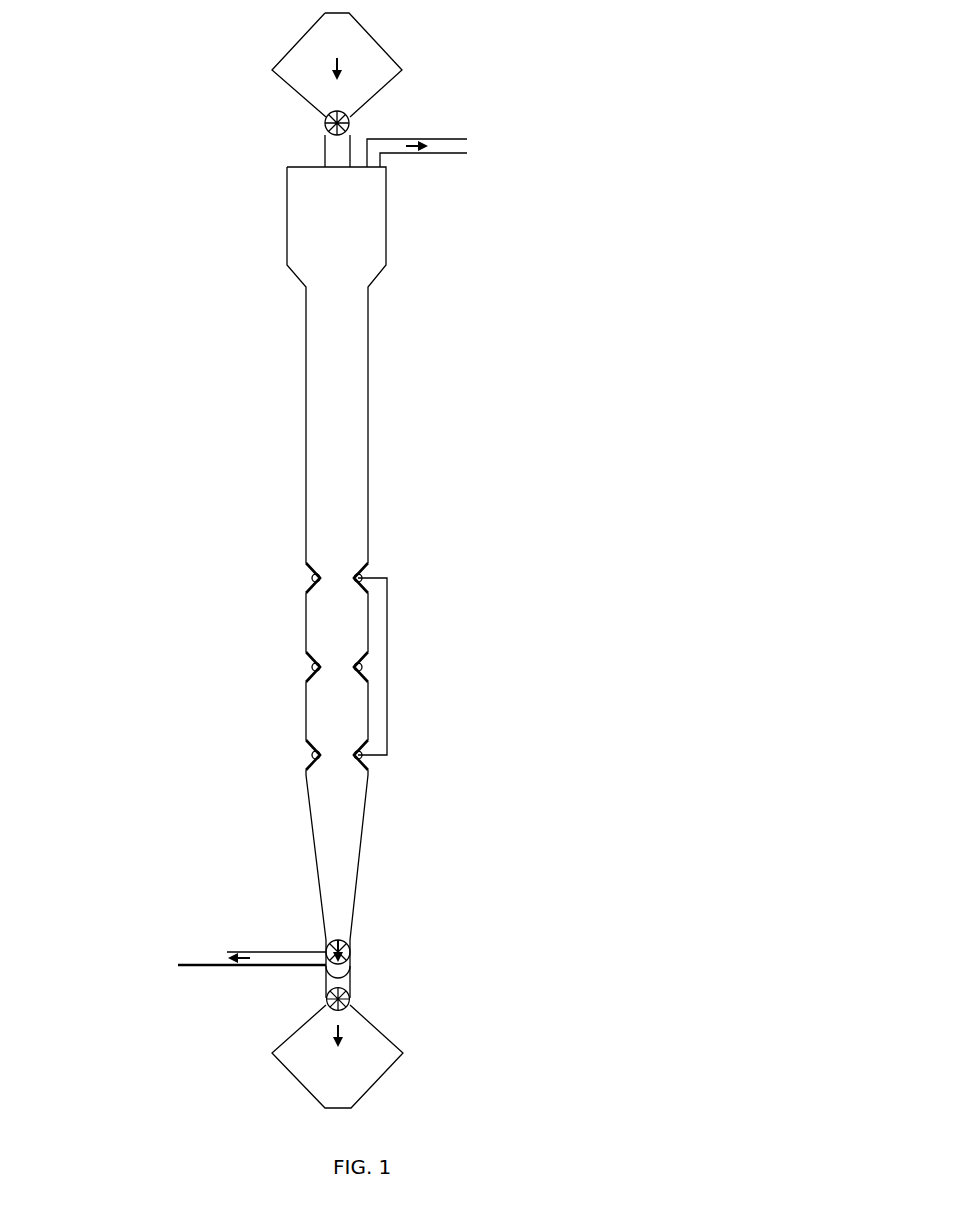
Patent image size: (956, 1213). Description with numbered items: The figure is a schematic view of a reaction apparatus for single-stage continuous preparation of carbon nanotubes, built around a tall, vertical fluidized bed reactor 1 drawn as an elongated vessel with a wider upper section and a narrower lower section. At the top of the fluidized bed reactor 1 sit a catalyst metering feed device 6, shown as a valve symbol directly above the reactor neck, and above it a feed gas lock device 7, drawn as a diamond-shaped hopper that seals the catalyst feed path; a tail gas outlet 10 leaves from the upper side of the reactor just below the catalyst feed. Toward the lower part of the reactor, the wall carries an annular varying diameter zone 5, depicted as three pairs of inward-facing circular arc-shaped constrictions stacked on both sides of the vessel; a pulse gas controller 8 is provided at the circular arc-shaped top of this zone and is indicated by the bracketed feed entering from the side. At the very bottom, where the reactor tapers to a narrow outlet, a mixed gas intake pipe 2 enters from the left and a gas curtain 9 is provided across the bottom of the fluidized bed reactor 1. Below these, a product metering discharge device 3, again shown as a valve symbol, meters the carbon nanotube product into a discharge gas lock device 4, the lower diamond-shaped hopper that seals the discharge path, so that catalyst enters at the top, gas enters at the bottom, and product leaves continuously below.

The fluidized bed reactor 1 is at (347, 411).
The mixed gas intake pipe 2 is at (232, 965).
The product metering discharge device 3 is at (350, 996).
The discharge gas lock device 4 is at (394, 1064).
The annular varying diameter zone 5 is at (277, 742).
The catalyst metering feed device 6 is at (325, 123).
The feed gas lock device 7 is at (402, 72).
The pulse gas controller 8 is at (356, 667).
The gas curtain 9 is at (350, 952).
The tail gas outlet 10 is at (432, 150).